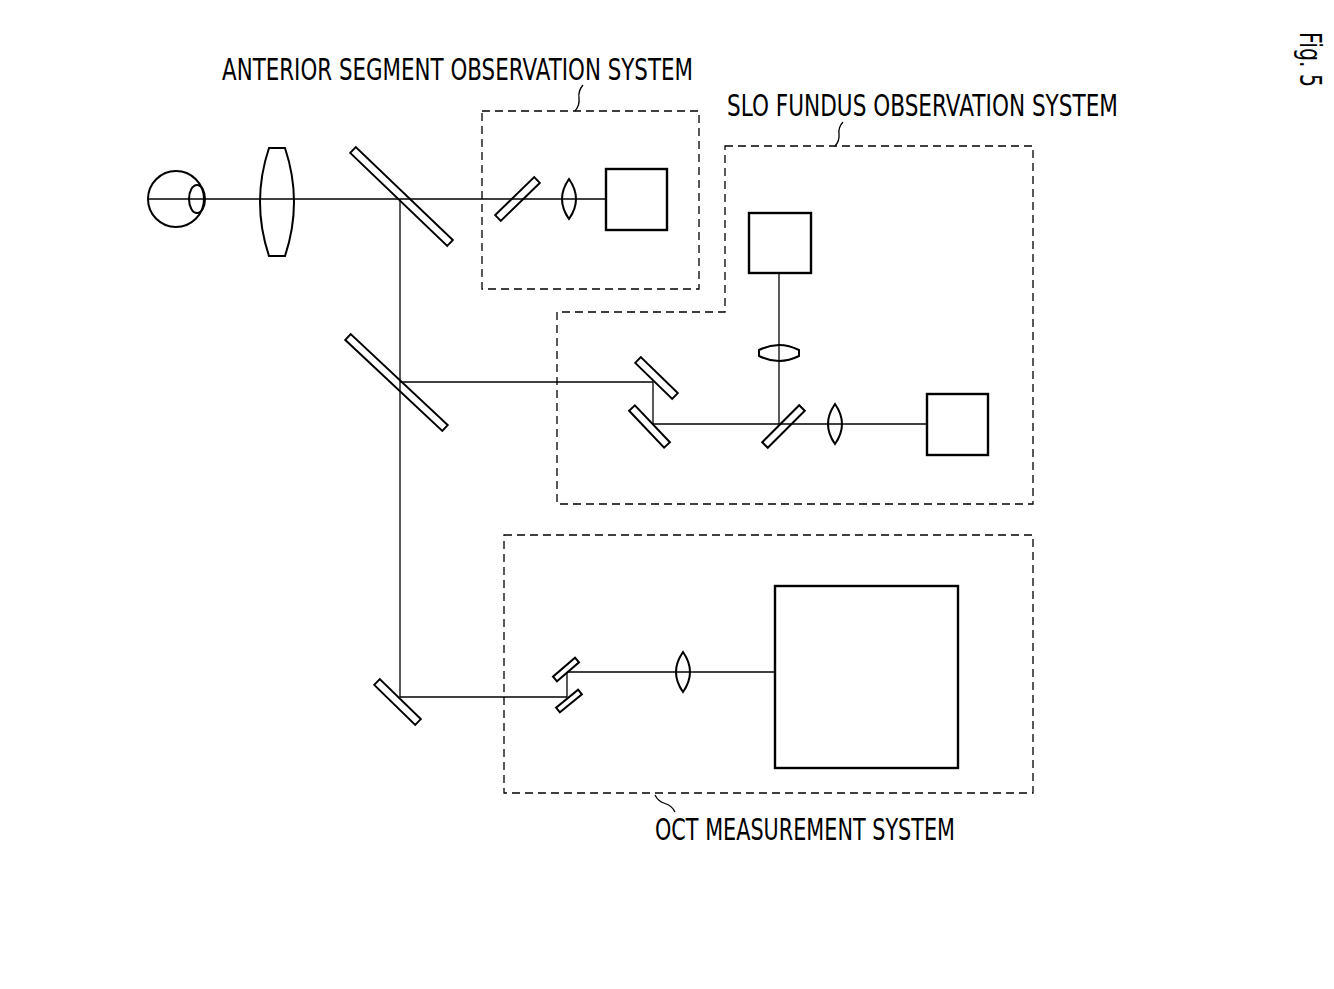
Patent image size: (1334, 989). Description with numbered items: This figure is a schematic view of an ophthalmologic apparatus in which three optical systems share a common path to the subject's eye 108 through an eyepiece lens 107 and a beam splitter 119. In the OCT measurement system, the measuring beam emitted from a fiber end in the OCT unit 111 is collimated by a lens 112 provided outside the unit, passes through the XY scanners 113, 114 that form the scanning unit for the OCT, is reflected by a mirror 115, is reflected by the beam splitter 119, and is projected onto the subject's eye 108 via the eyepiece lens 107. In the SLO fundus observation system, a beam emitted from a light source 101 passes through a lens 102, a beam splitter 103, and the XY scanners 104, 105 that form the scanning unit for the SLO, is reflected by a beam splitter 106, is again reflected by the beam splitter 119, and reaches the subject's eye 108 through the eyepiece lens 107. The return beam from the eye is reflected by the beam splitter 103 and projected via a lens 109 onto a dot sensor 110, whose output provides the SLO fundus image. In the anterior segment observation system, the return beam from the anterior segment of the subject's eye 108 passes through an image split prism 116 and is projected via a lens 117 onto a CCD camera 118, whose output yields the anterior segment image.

The light source 101 is at (959, 394).
The lens 102 is at (842, 432).
The beam splitter 103 is at (783, 443).
The XY scanner 104 is at (642, 428).
The XY scanner 105 is at (662, 378).
The beam splitter 106 is at (377, 372).
The eyepiece lens 107 is at (277, 258).
The subject's eye 108 is at (177, 172).
The lens 109 is at (793, 347).
The dot sensor 110 is at (784, 213).
The OCT unit 111 is at (958, 672).
The lens 112 is at (688, 652).
The XY scanner 113 is at (556, 663).
The XY scanner 114 is at (576, 712).
The mirror 115 is at (392, 702).
The image split prism 116 is at (515, 213).
The lens 117 is at (570, 218).
The CCD camera 118 is at (645, 169).
The beam splitter 119 is at (375, 162).